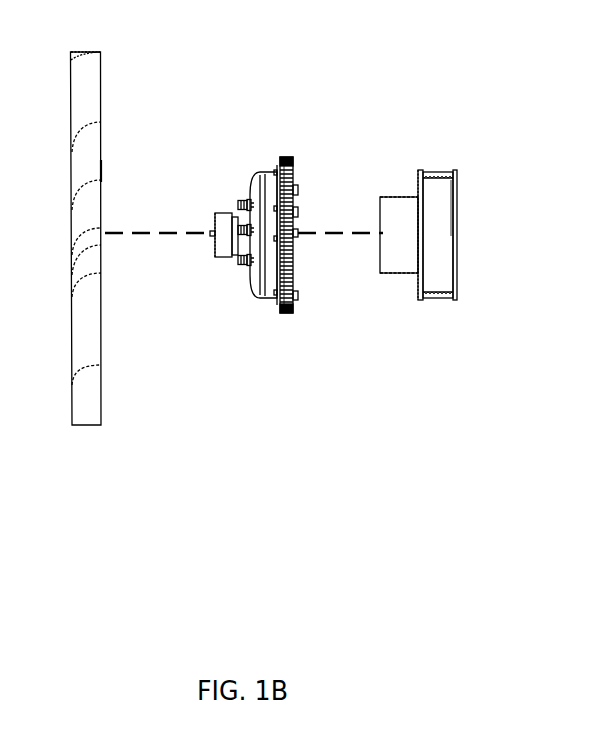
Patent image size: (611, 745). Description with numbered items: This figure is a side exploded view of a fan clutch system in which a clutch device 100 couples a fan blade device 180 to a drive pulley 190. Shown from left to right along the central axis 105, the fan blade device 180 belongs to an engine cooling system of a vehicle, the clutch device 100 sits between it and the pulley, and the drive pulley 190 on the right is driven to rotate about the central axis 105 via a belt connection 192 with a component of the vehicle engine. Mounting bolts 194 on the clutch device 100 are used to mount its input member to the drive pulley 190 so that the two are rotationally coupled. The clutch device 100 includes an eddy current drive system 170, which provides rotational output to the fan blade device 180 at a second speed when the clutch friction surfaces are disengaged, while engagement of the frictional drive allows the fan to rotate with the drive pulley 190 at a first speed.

The clutch device 100 is at (170, 78).
The central axis 105 is at (165, 236).
The eddy current drive system 170 is at (297, 134).
The fan blade device 180 is at (80, 84).
The drive pulley 190 is at (457, 188).
The belt connection 192 is at (433, 171).
The mounting bolts 194 is at (295, 184).